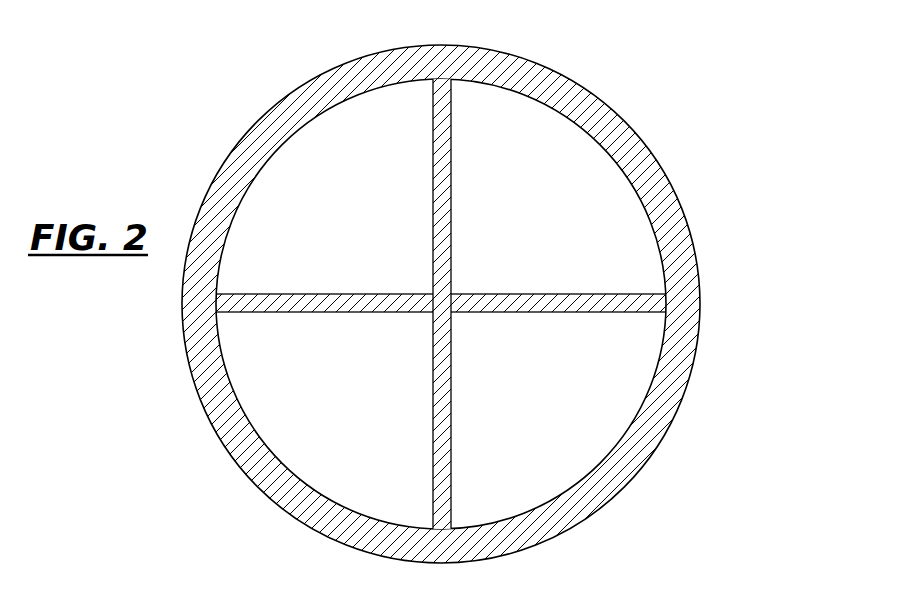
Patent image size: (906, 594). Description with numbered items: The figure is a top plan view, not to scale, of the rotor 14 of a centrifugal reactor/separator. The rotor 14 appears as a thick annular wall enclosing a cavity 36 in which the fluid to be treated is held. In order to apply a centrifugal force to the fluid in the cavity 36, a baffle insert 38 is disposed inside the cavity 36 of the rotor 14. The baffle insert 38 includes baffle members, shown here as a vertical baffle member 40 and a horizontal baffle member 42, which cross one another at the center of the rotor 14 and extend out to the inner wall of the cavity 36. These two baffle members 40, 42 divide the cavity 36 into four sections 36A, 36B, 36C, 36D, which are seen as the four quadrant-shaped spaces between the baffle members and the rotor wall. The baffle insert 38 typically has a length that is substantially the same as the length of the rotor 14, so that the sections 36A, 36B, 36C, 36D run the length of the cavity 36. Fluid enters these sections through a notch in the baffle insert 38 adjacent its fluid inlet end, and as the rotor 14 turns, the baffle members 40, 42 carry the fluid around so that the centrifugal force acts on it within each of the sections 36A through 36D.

The rotor 14 is at (684, 271).
The cavity 36 is at (558, 237).
The first cavity section 36A is at (522, 207).
The second cavity section 36B is at (520, 400).
The third cavity section 36C is at (344, 384).
The fourth cavity section 36D is at (330, 222).
The baffle insert 38 is at (449, 171).
The baffle member 40 is at (546, 306).
The baffle member 42 is at (440, 217).